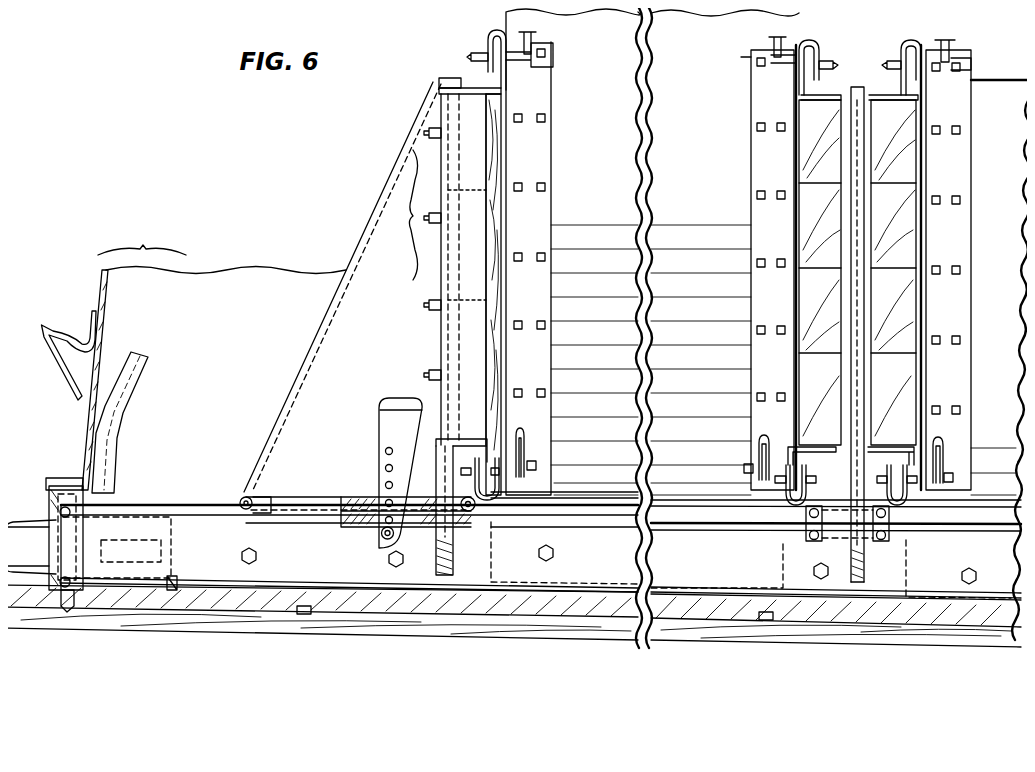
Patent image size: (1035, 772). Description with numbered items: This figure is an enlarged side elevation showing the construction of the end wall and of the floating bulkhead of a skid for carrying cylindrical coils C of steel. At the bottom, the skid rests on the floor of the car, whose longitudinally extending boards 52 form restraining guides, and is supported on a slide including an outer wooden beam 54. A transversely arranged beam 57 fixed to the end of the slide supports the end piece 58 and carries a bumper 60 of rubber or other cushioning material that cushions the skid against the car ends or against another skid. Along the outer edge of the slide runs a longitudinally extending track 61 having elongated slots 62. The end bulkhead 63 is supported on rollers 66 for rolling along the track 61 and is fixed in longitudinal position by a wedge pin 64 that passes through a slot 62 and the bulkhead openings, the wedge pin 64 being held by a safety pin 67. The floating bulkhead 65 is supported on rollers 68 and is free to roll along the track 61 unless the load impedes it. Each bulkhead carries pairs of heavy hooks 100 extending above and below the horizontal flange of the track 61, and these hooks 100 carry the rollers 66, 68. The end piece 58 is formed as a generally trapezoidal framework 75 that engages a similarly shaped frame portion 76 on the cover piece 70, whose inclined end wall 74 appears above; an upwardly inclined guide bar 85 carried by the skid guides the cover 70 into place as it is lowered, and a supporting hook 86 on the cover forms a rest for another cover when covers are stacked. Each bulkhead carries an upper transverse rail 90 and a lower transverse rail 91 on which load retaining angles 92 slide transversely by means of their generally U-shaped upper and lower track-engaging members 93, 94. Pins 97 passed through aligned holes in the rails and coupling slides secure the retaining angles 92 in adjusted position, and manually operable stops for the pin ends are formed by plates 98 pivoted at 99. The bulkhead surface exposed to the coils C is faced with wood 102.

The longitudinally extending boards 52 is at (310, 615).
The outer beam 54 is at (210, 615).
The transversely arranged beam 57 is at (176, 576).
The end piece 58 is at (64, 612).
The bumper 60 is at (32, 547).
The track 61 is at (195, 510).
The elongated slot 62 is at (364, 500).
The end bulkhead 63 is at (400, 201).
The wedge pin 64 is at (383, 438).
The floating bulkhead 65 is at (956, 156).
The roller 66 is at (246, 499).
The safety pin 67 is at (379, 538).
The roller 68 is at (810, 525).
The cover piece 70 is at (222, 241).
The inclined end wall 74 is at (100, 271).
The trapezoidal framework 75 is at (60, 495).
The frame portion 76 is at (52, 478).
The guide bar 85 is at (118, 428).
The supporting hook 86 is at (55, 357).
The upper transverse rail 90 is at (462, 86).
The lower transverse rail 91 is at (472, 436).
The load retaining angle 92 is at (530, 230).
The upper track-engaging member 93 is at (496, 30).
The lower track-engaging member 94 is at (480, 505).
The pin 97 is at (473, 53).
The plate 98 is at (542, 64).
The pivot 99 is at (532, 36).
The heavy hook 100 is at (453, 553).
The wood 102 is at (497, 284).
The cylindrical coil C is at (632, 162).